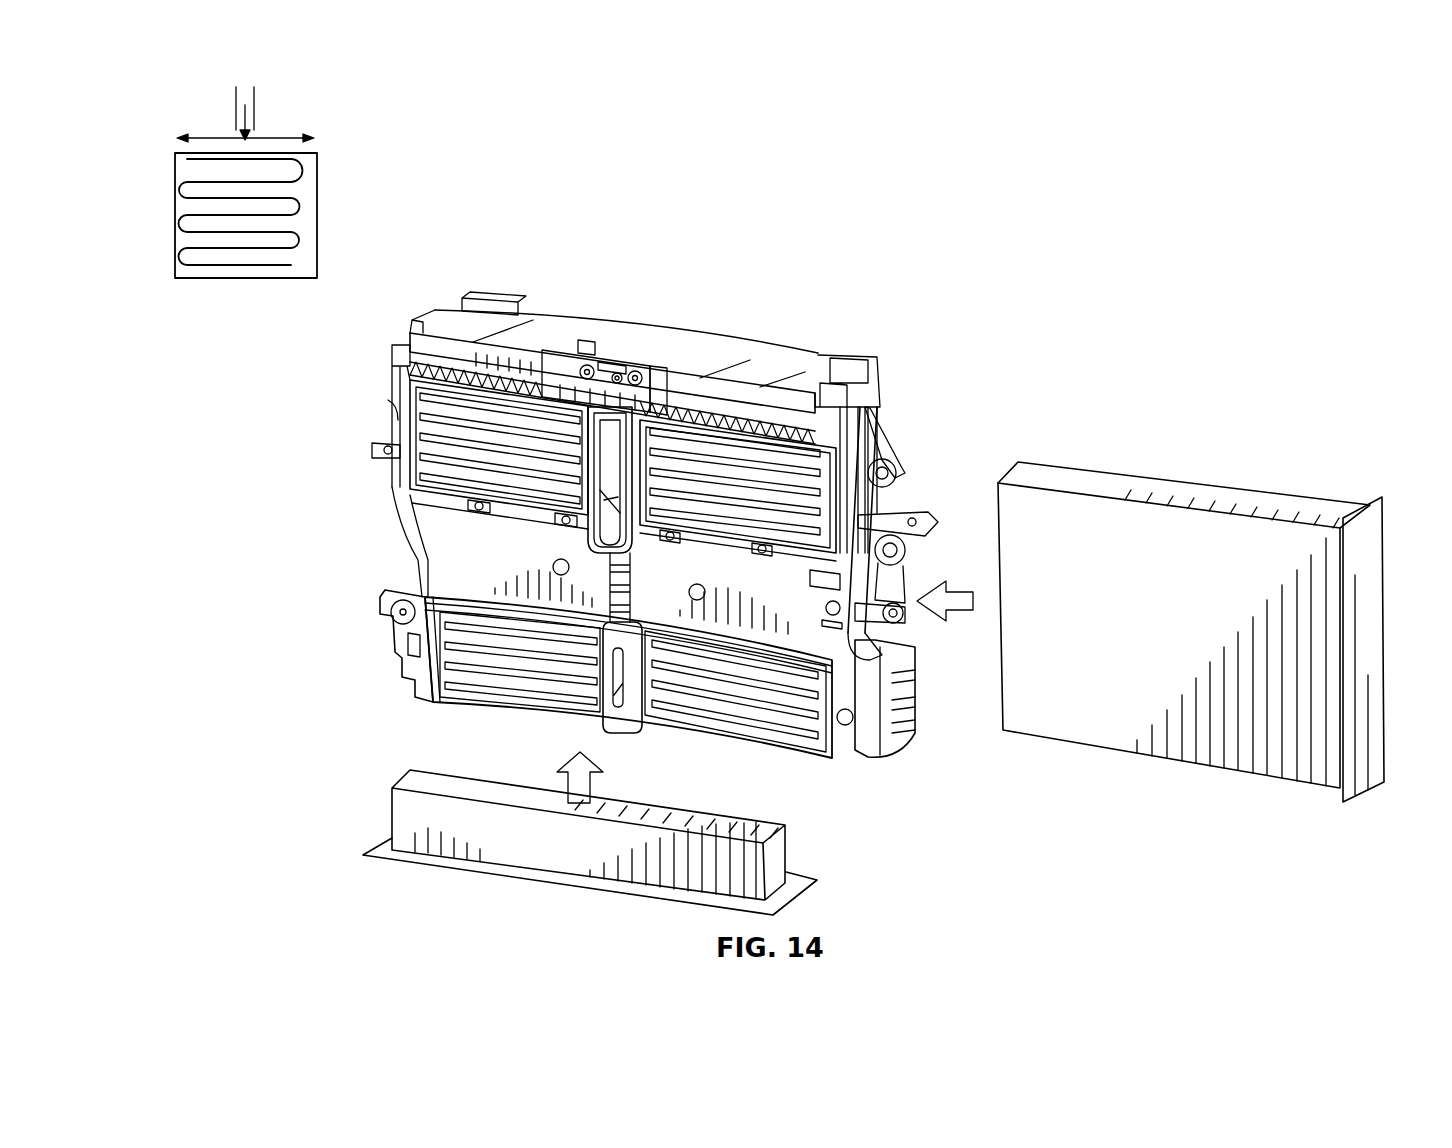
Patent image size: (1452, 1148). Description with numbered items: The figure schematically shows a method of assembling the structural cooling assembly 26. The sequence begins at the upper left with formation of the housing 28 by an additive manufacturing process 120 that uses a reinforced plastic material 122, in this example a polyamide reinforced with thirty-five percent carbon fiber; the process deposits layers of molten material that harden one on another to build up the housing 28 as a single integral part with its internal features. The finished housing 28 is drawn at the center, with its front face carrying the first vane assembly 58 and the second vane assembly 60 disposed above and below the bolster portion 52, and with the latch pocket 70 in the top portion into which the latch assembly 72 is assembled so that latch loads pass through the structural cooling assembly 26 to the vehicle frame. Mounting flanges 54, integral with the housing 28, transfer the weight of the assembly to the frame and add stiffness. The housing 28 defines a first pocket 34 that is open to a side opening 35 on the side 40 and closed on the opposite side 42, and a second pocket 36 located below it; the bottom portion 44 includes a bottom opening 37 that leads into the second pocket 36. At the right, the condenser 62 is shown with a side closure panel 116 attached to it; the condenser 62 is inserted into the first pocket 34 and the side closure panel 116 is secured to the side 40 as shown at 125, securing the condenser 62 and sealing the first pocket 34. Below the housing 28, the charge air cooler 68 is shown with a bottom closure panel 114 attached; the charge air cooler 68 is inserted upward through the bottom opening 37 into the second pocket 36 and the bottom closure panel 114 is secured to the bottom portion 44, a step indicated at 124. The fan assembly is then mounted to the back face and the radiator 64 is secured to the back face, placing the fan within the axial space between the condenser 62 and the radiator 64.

The structural cooling assembly 26 is at (790, 325).
The housing 28 is at (178, 288).
The first pocket 34 is at (898, 477).
The side opening 35 is at (888, 468).
The second pocket 36 is at (530, 726).
The bottom opening 37 is at (789, 771).
The side 40 is at (908, 379).
The side 42 is at (374, 358).
The bottom portion 44 is at (428, 727).
The bolster portion 52 is at (478, 547).
The mounting flanges 54 is at (915, 520).
The first vane assembly 58 is at (362, 392).
The second vane assembly 60 is at (362, 588).
The condenser 62 is at (1200, 735).
The radiator 64 is at (878, 445).
The charge air cooler 68 is at (753, 863).
The latch pocket 70 is at (662, 355).
The latch assembly 72 is at (630, 358).
The bottom closure panel 114 is at (673, 893).
The side closure panel 116 is at (1367, 661).
The additive manufacturing process 120 is at (272, 108).
The reinforced plastic material 122 is at (262, 66).
The lower filter assembly 124 is at (412, 889).
The condenser installation step 125 is at (1258, 404).